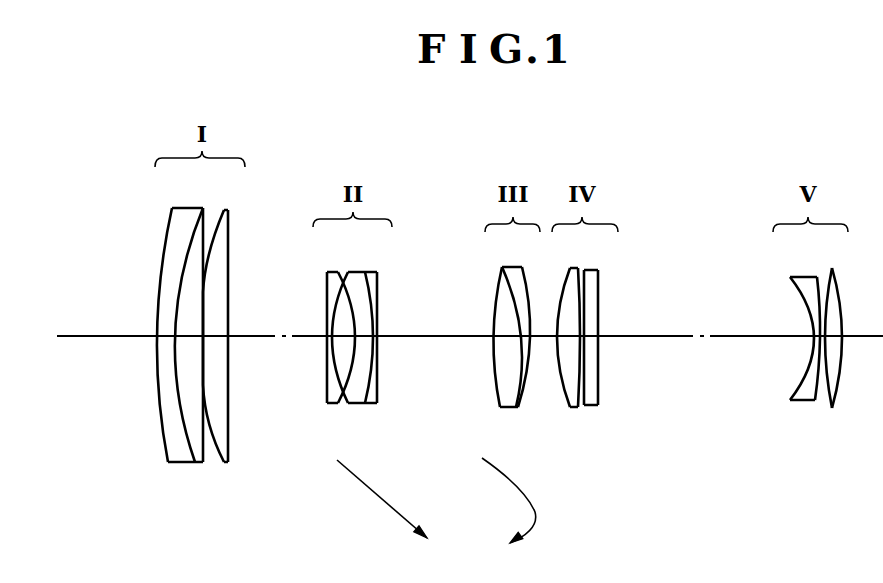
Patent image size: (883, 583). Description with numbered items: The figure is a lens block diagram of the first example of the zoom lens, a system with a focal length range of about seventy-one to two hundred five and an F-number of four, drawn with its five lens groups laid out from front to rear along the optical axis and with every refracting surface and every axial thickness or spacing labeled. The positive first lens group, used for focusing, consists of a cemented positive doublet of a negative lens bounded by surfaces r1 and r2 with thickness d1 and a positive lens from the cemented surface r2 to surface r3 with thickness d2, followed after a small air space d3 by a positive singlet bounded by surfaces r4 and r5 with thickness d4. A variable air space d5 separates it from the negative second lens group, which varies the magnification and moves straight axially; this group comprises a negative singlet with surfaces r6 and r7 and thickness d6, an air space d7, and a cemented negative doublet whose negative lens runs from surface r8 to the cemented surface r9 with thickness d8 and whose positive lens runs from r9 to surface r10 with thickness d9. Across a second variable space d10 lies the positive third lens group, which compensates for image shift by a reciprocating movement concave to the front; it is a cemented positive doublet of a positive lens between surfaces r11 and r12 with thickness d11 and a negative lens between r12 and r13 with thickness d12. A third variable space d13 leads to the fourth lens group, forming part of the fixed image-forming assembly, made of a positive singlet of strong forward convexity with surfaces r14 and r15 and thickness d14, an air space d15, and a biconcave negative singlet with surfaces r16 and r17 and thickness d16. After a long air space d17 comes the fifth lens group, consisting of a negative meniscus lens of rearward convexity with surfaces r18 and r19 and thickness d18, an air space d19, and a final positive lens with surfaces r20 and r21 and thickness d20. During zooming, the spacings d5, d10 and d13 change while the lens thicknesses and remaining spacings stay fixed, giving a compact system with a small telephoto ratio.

The first lens surface r1 is at (165, 442).
The second lens surface r2 is at (188, 438).
The third lens surface r3 is at (207, 442).
The fourth lens surface r4 is at (210, 440).
The fifth lens surface r5 is at (224, 440).
The sixth lens surface r6 is at (325, 406).
The seventh lens surface r7 is at (338, 406).
The eighth lens surface r8 is at (348, 406).
The ninth lens surface r9 is at (366, 405).
The tenth lens surface r10 is at (380, 405).
The eleventh lens surface r11 is at (497, 400).
The twelfth lens surface r12 is at (512, 410).
The thirteenth lens surface r13 is at (524, 398).
The fourteenth lens surface r14 is at (562, 393).
The fifteenth lens surface r15 is at (578, 410).
The sixteenth lens surface r16 is at (590, 408).
The seventeenth lens surface r17 is at (600, 403).
The eighteenth lens surface r18 is at (790, 397).
The nineteenth lens surface r19 is at (812, 397).
The twentieth lens surface r20 is at (825, 395).
The twenty-first lens surface r21 is at (840, 392).
The first axial thickness d1 is at (167, 336).
The second axial thickness d2 is at (183, 336).
The third axial separation d3 is at (213, 336).
The fourth axial thickness d4 is at (225, 336).
The fifth axial separation d5 is at (268, 336).
The sixth axial thickness d6 is at (337, 336).
The seventh axial separation d7 is at (348, 336).
The eighth axial thickness d8 is at (358, 336).
The ninth axial thickness d9 is at (368, 336).
The tenth axial separation d10 is at (436, 336).
The eleventh axial thickness d11 is at (505, 336).
The twelfth axial thickness d12 is at (523, 336).
The thirteenth axial separation d13 is at (542, 336).
The fourteenth axial thickness d14 is at (566, 336).
The fifteenth axial separation d15 is at (581, 336).
The sixteenth axial thickness d16 is at (589, 336).
The seventeenth axial separation d17 is at (682, 336).
The eighteenth axial thickness d18 is at (816, 336).
The nineteenth axial separation d19 is at (822, 336).
The twentieth axial thickness d20 is at (834, 336).